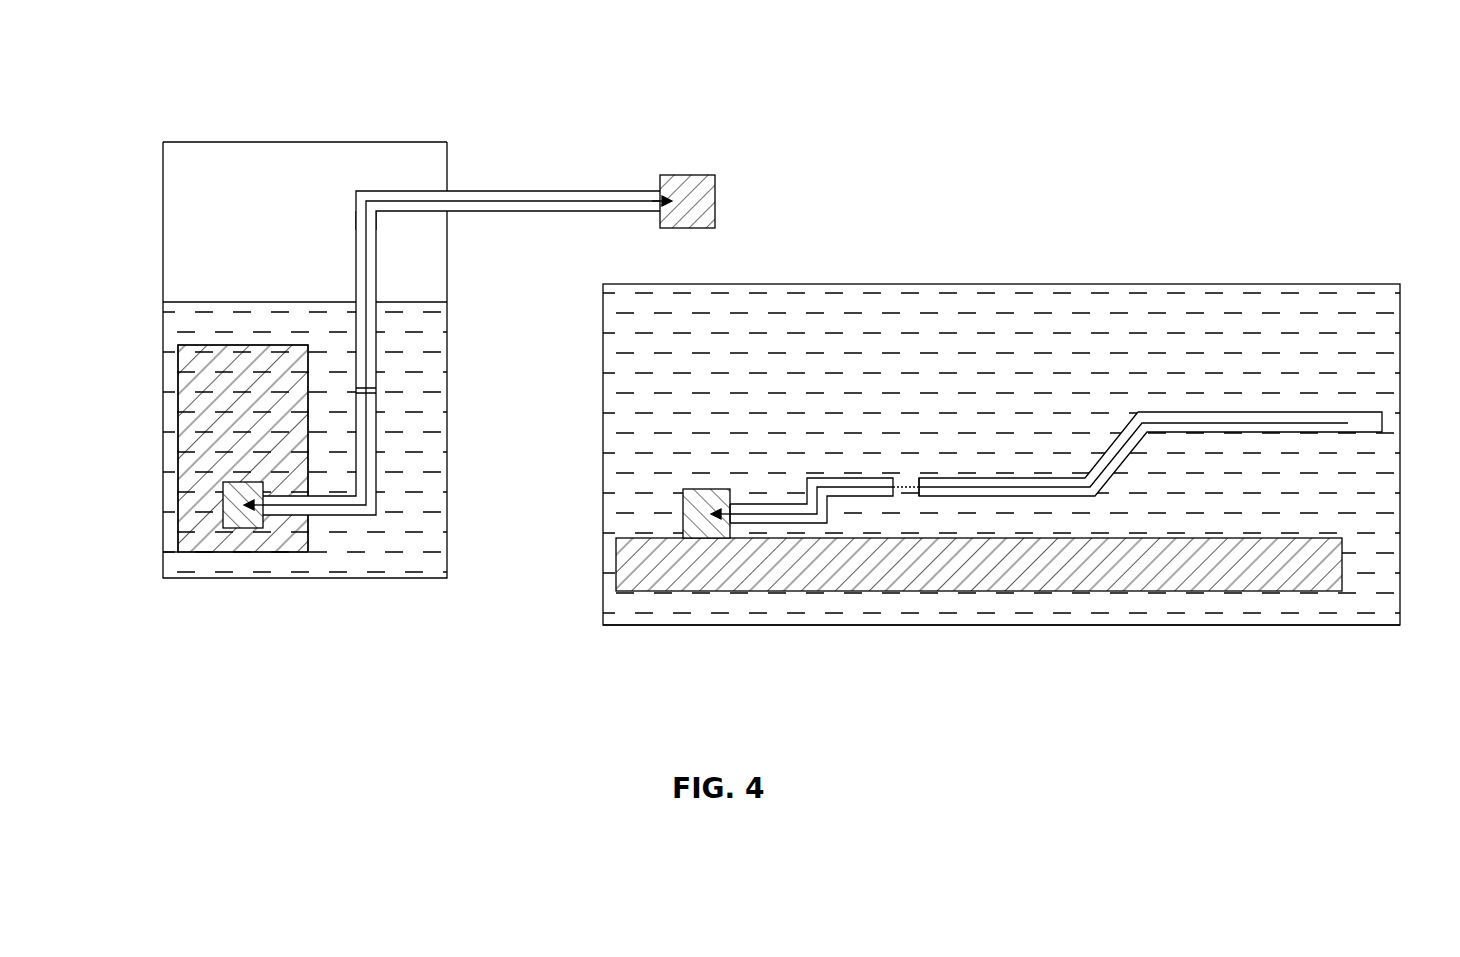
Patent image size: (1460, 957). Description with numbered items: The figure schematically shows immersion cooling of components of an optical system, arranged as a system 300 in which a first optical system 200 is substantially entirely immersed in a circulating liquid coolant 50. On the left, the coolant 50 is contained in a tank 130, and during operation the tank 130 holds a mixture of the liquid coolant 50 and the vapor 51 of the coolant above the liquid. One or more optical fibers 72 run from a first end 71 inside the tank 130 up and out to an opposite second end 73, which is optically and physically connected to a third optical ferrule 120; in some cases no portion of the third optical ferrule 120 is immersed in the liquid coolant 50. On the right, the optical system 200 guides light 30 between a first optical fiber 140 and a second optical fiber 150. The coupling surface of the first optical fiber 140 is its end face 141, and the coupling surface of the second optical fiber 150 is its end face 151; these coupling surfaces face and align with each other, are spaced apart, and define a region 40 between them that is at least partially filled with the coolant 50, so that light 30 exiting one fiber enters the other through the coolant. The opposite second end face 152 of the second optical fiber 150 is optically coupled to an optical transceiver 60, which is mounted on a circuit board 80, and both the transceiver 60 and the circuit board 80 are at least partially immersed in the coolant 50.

The system 300 is at (160, 56).
The vapor 51 is at (245, 155).
The tank 130 is at (163, 215).
The coolant 50 is at (180, 325).
The first end of optical fibers 71 is at (360, 392).
The optical fibers 72 is at (495, 191).
The second end of optical fibers 73 is at (660, 193).
The third optical ferrule 120 is at (693, 175).
The light 30 is at (368, 232).
The first optical fiber 140 is at (377, 362).
The second optical fiber 150 is at (377, 445).
The optical system 200 is at (392, 532).
The circuit board 80 is at (203, 553).
The optical transceiver 60 is at (245, 528).
The second end face of second optical fiber 152 is at (732, 495).
The end face of first optical fiber 141 is at (913, 477).
The end face of second optical fiber 151 is at (913, 507).
The region 40 is at (894, 490).